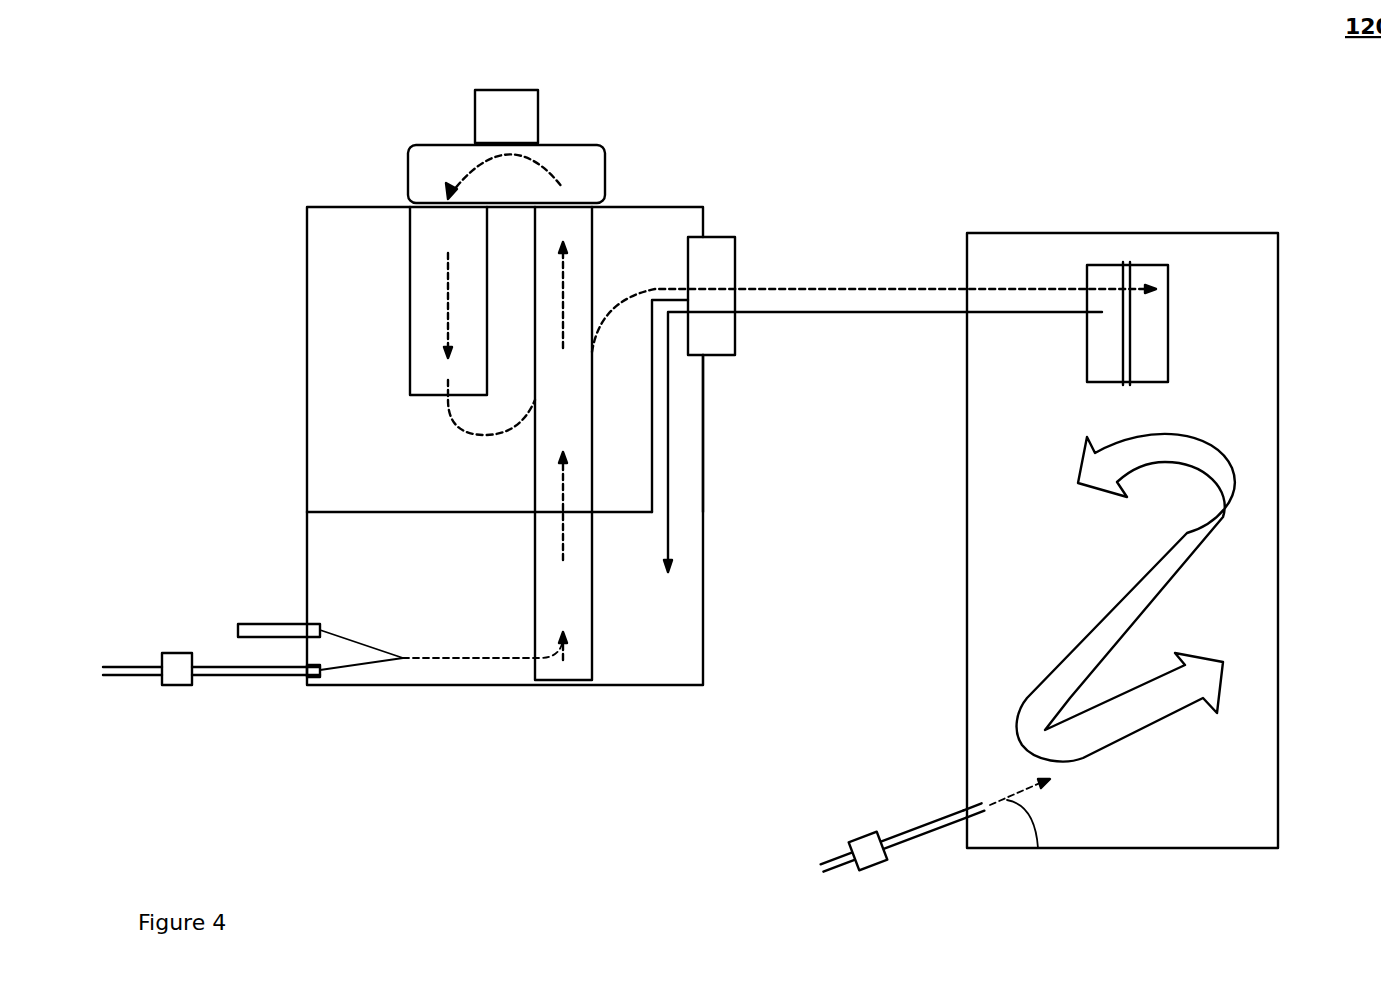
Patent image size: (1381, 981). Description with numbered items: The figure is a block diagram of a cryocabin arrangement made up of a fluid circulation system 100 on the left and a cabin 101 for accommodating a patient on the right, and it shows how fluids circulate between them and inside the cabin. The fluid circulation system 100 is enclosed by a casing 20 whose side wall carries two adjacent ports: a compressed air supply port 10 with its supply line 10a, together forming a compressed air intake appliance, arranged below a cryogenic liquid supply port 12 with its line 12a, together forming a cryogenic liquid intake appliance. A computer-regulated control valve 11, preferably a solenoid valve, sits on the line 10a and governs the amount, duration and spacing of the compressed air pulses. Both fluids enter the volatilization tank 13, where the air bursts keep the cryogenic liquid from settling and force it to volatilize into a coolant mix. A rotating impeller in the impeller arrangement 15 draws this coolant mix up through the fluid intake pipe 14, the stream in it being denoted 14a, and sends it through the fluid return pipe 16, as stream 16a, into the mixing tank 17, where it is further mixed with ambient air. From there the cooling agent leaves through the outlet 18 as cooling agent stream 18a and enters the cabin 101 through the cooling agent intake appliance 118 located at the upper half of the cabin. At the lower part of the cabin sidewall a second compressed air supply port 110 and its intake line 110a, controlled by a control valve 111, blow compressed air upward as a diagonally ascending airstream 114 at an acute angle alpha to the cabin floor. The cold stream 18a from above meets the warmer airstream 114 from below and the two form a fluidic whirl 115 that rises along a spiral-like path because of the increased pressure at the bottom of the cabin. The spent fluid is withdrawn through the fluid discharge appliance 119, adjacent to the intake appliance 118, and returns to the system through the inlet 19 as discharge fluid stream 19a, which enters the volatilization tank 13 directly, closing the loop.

The fluid circulation system 100 is at (461, 428).
The mixing tank 17 is at (440, 356).
The volatilization tank 13 is at (448, 520).
The casing 20 is at (422, 422).
The impeller arrangement 15 is at (563, 131).
The fluid return pipe 16 is at (392, 269).
The fluid stream in the fluid return pipe 16a is at (440, 289).
The fluid intake pipe 14 is at (615, 505).
The fluid stream in the fluid intake pipe 14a is at (666, 486).
The inlet for discharge fluid 19 is at (754, 436).
The outlet for cooling agent 18 is at (760, 250).
The cooling agent stream 18a is at (874, 272).
The discharge fluid stream 19a is at (895, 366).
The cryogenic liquid supply port 12 is at (264, 586).
The cryogenic liquid supply line 12a is at (346, 596).
The control valve 11 is at (129, 618).
The compressed air supply port 10 is at (282, 734).
The compressed air supply line 10a is at (284, 720).
The cabin for accommodating a patient 101 is at (1141, 486).
The cooling agent intake appliance 118 is at (1169, 253).
The fluid discharge appliance 119 is at (1145, 257).
The fluidic whirl 115 is at (1182, 578).
The diagonally ascending airstream 114 is at (980, 760).
The compressed air supply port 110 is at (894, 794).
The compressed air intake line 110a is at (905, 797).
The control valve 111 is at (825, 818).